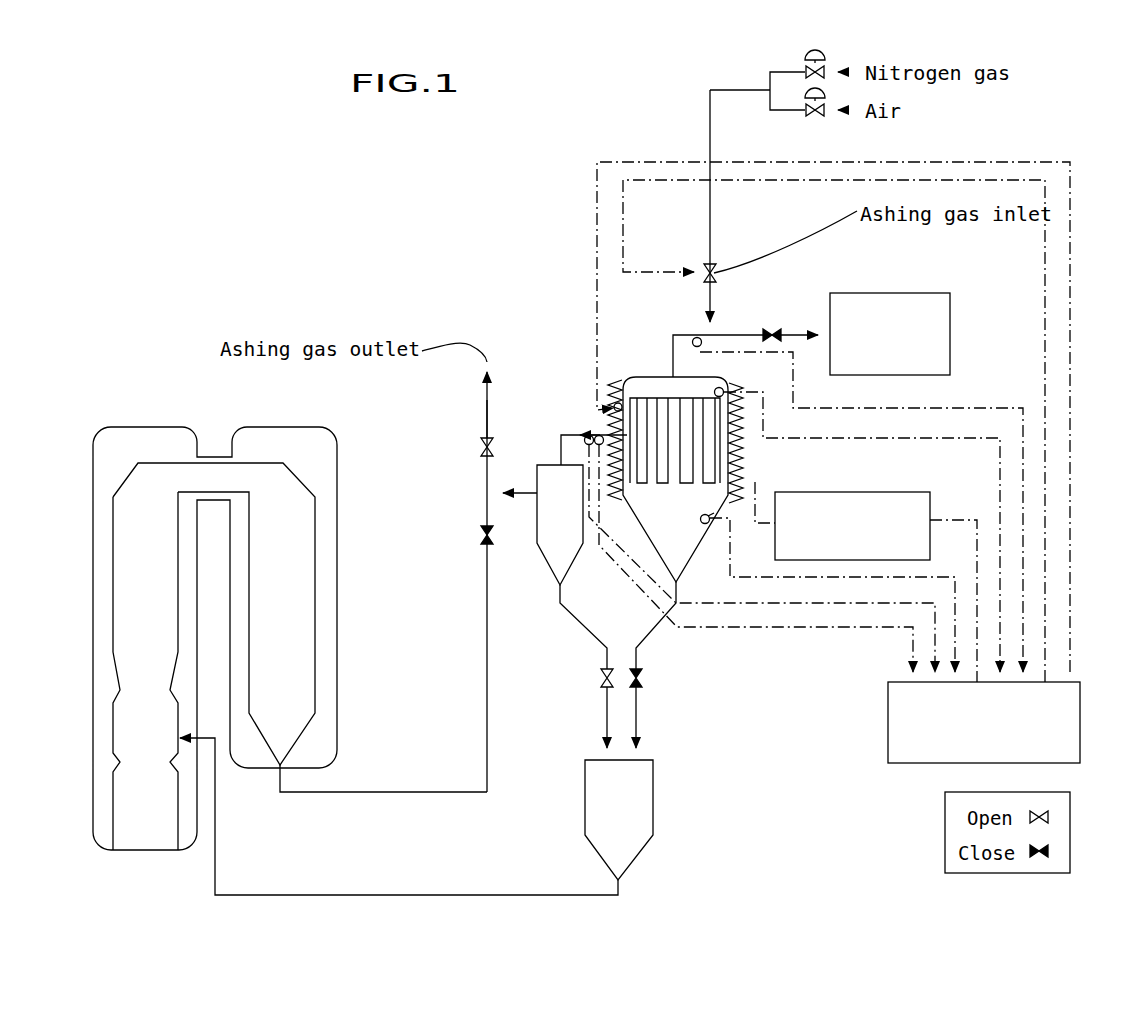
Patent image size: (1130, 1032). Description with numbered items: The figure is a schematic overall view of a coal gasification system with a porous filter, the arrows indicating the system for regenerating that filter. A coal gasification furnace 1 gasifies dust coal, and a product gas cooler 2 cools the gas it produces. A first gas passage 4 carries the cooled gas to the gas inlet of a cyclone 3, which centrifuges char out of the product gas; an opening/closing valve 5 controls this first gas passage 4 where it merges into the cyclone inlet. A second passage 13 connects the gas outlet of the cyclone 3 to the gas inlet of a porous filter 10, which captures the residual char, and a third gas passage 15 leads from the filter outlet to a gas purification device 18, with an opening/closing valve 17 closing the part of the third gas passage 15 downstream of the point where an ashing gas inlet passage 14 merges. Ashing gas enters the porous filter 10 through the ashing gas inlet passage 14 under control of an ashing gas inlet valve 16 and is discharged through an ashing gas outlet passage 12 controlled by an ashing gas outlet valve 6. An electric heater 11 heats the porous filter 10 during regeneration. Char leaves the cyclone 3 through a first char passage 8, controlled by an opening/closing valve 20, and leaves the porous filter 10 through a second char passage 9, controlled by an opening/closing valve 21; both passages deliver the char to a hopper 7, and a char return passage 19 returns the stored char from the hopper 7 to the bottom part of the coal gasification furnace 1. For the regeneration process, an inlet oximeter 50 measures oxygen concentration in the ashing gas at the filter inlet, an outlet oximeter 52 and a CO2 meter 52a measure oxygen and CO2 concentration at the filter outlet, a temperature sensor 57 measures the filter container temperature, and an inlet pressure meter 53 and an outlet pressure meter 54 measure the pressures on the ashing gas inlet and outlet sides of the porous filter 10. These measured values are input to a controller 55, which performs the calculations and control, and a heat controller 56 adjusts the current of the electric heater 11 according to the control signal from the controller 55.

The coal gasification furnace 1 is at (136, 460).
The product gas cooler 2 is at (255, 450).
The cyclone 3 is at (545, 578).
The first gas passage 4 is at (486, 664).
The opening/closing valve 5 is at (482, 542).
The ashing gas outlet valve 6 is at (478, 440).
The hopper 7 is at (654, 797).
The first char passage 8 is at (563, 592).
The second char passage 9 is at (657, 628).
The porous filter 10 is at (630, 367).
The electric heater 11 is at (750, 482).
The ashing gas outlet passage 12 is at (489, 431).
The second passage 13 is at (582, 434).
The ashing gas inlet passage 14 is at (707, 252).
The third gas passage 15 is at (690, 338).
The ashing gas inlet valve 16 is at (714, 332).
The opening/closing valve 17 is at (775, 330).
The gas purification device 18 is at (952, 340).
The char return passage 19 is at (465, 893).
The opening/closing valve 20 is at (608, 667).
The opening/closing valve 21 is at (642, 685).
The inlet oximeter 50 is at (670, 337).
The outlet oximeter 52 is at (582, 440).
The CO2 meter 52a is at (598, 436).
The inlet pressure meter 53 is at (719, 388).
The outlet pressure meter 54 is at (705, 524).
The controller 55 is at (913, 765).
The heat controller 56 is at (932, 511).
The temperature sensor 57 is at (610, 393).